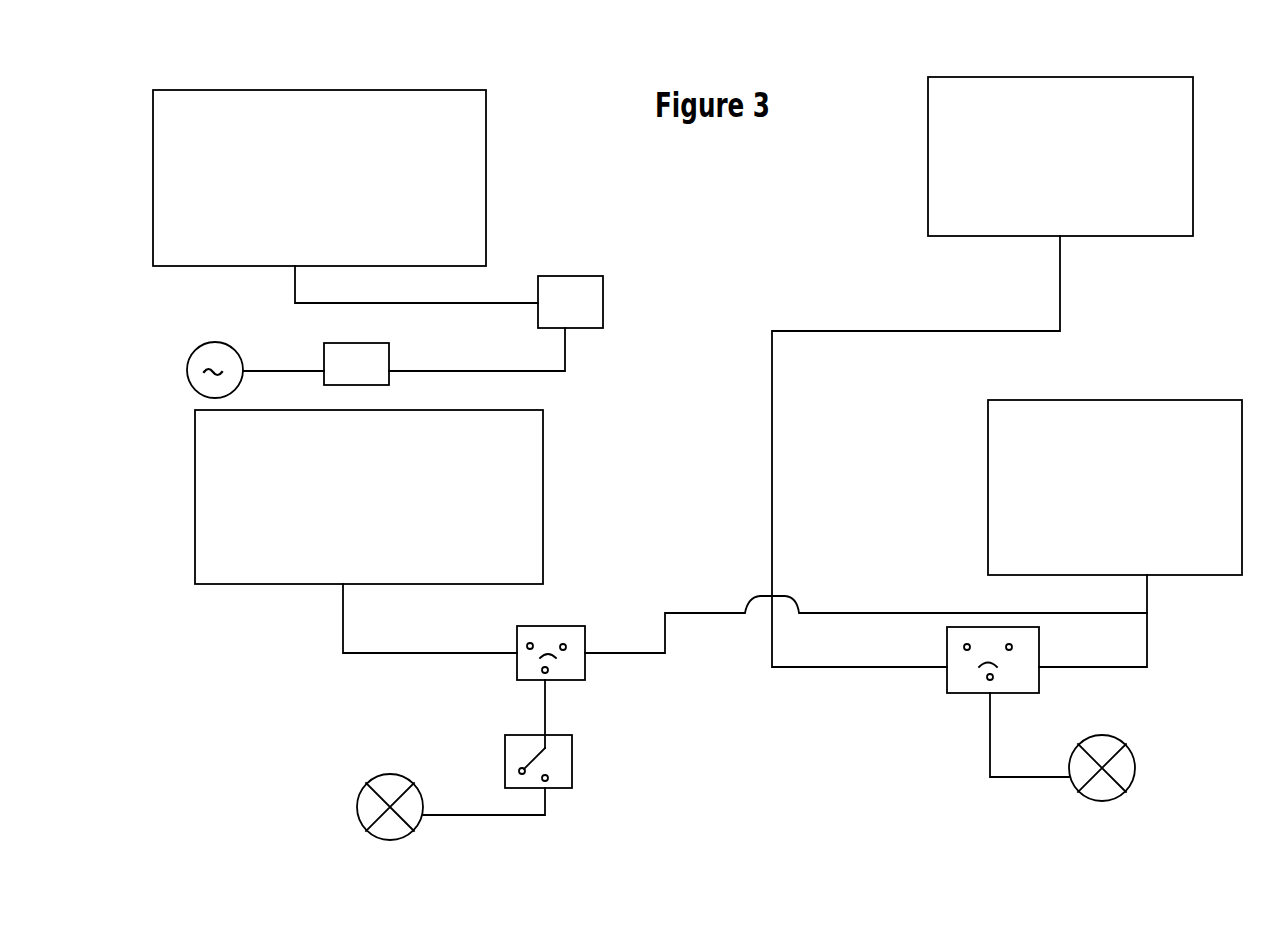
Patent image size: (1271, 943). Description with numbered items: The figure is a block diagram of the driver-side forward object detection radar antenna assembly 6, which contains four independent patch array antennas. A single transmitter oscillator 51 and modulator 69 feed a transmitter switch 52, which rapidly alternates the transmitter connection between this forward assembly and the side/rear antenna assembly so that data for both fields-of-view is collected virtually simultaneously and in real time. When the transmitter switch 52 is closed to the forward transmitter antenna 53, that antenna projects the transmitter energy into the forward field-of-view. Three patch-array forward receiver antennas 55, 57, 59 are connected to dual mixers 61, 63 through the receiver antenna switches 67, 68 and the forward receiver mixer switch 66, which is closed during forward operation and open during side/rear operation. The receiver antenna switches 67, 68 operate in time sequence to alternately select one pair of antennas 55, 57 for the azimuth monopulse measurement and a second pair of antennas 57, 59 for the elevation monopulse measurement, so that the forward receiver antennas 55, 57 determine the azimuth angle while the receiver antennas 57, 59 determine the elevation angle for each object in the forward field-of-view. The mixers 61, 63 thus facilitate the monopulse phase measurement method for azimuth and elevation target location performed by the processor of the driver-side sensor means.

The forward radar antenna assembly 6 is at (530, 73).
The transmitter oscillator 51 is at (198, 360).
The transmitter switch 52 is at (597, 295).
The forward transmitter antenna 53 is at (445, 212).
The forward receiver antenna 55 is at (515, 489).
The forward receiver antenna 57 is at (1012, 487).
The forward receiver antenna 59 is at (970, 188).
The mixer 61 is at (362, 800).
The mixer 63 is at (1128, 766).
The forward receiver mixer switch 66 is at (563, 766).
The receiver antenna switch 67 is at (522, 666).
The receiver antenna switch 68 is at (1030, 677).
The modulator 69 is at (345, 363).